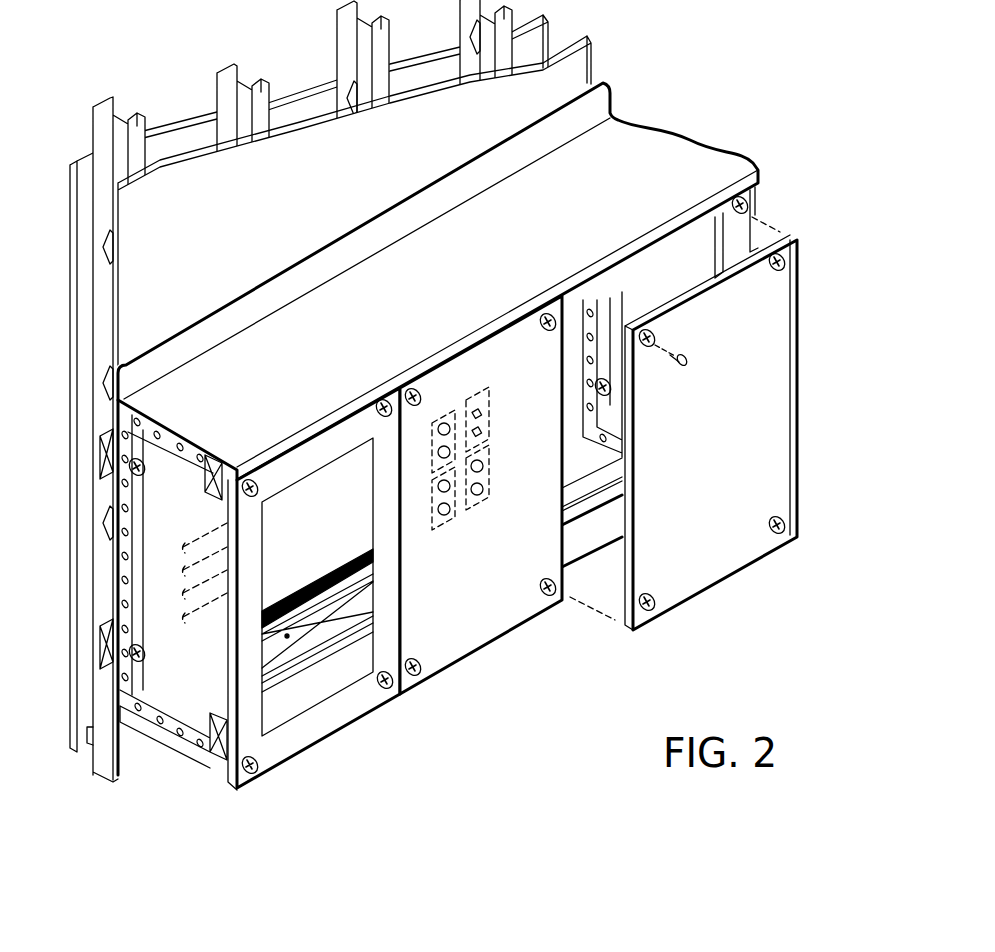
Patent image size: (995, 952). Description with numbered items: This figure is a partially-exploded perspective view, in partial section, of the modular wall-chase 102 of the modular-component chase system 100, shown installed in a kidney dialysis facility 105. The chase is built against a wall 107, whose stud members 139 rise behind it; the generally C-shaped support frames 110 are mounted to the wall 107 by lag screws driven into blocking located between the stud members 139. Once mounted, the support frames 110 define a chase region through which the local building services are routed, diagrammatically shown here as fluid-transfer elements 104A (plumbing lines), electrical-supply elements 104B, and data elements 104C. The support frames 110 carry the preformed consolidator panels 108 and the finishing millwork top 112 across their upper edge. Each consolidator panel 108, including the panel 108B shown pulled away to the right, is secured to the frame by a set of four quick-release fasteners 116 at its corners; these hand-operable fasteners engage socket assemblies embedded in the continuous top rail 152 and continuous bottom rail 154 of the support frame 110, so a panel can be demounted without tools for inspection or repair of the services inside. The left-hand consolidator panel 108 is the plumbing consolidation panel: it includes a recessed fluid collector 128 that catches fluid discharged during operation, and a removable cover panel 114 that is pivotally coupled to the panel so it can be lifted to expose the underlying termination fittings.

The modular-component chase system 100 is at (401, 411).
The modular wall-chase 102 is at (395, 264).
The fluid-transfer elements 104A is at (183, 590).
The electrical-supply elements 104B is at (450, 520).
The data elements 104C is at (480, 397).
The kidney dialysis facility 105 is at (351, 391).
The wall 107 is at (590, 69).
The preformed consolidator panels 108 is at (698, 622).
The cover panel 108B is at (508, 501).
The support frames 110 is at (612, 295).
The finishing millwork top 112 is at (170, 383).
The cover panel 114 is at (333, 490).
The quick-release fasteners 116 is at (410, 390).
The fluid collector 128 is at (352, 600).
The stud members 139 is at (117, 100).
The top rail 152 is at (208, 446).
The bottom rail 154 is at (208, 760).